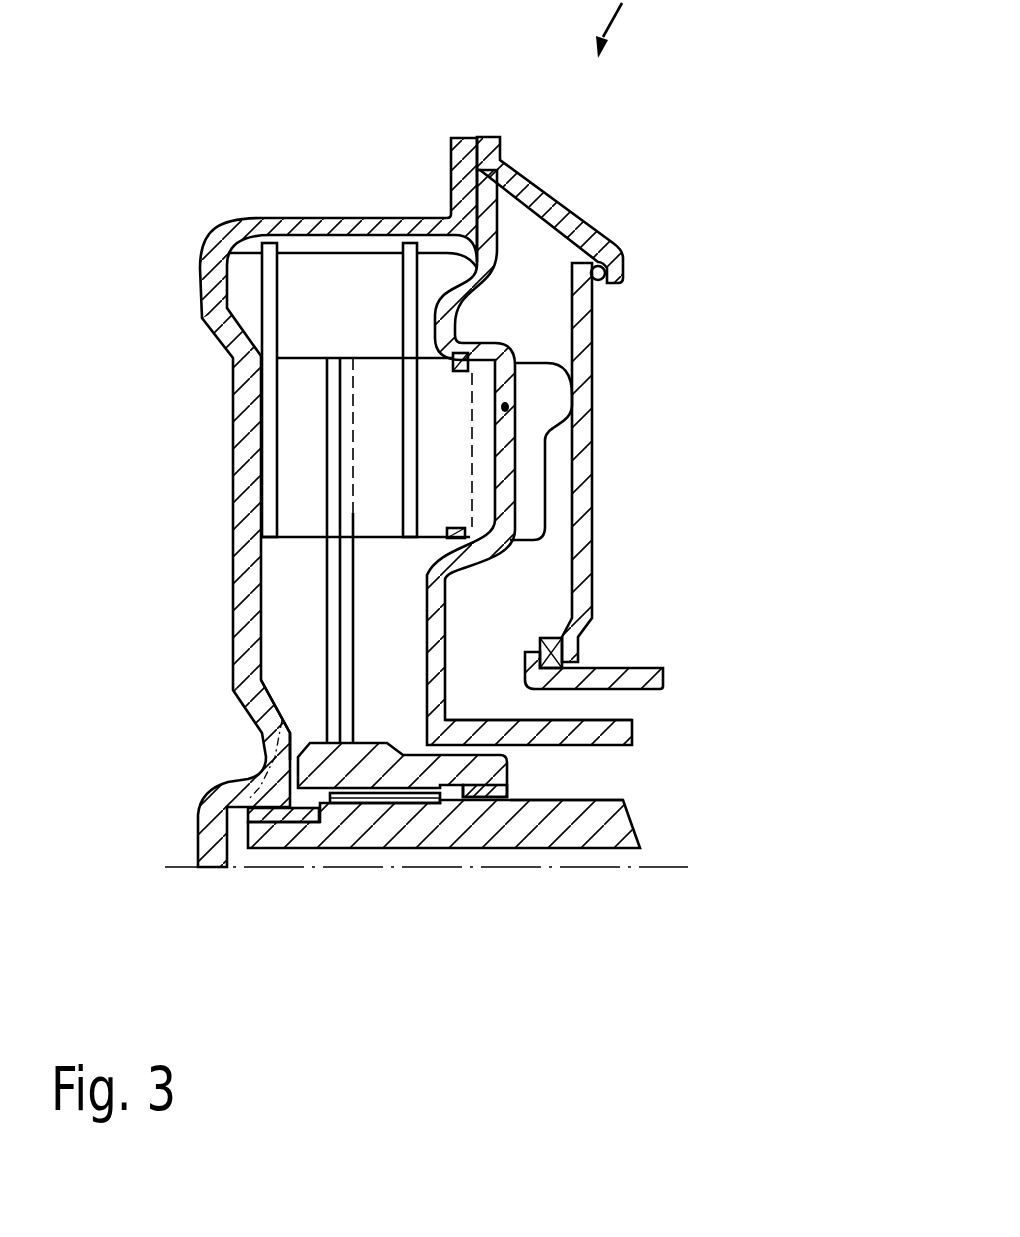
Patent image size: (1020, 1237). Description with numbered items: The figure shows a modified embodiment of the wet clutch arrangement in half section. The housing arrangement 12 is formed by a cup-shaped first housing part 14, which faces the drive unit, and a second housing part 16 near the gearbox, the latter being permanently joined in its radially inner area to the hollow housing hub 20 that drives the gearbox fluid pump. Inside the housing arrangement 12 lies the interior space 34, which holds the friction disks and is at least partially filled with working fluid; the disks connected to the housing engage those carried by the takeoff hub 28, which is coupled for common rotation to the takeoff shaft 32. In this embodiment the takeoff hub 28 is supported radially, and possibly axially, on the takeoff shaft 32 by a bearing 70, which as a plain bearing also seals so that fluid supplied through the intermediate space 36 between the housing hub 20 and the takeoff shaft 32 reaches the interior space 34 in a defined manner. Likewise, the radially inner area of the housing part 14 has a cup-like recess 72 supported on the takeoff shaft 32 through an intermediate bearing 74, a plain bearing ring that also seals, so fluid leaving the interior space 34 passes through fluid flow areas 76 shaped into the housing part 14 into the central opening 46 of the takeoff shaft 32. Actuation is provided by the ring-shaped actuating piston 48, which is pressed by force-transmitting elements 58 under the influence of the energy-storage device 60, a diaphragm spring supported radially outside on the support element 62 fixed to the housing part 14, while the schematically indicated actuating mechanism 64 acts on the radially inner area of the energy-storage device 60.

The housing arrangement 12 is at (357, 223).
The first housing part 14 is at (245, 477).
The second housing part 16 is at (447, 612).
The housing hub 20 is at (610, 727).
The takeoff hub 28 is at (353, 768).
The takeoff shaft 32 is at (560, 828).
The interior space 34 is at (400, 572).
The intermediate space 36 is at (601, 762).
The central opening 46 is at (383, 858).
The actuating piston 48 is at (448, 400).
The force-transmitting element 58 is at (533, 475).
The energy-storage device 60 is at (590, 340).
The support element 62 is at (547, 197).
The actuating mechanism 64 is at (647, 670).
The bearing 70 is at (483, 800).
The cup-like recess 72 is at (200, 833).
The intermediate bearing 74 is at (268, 822).
The fluid flow areas 76 is at (266, 752).